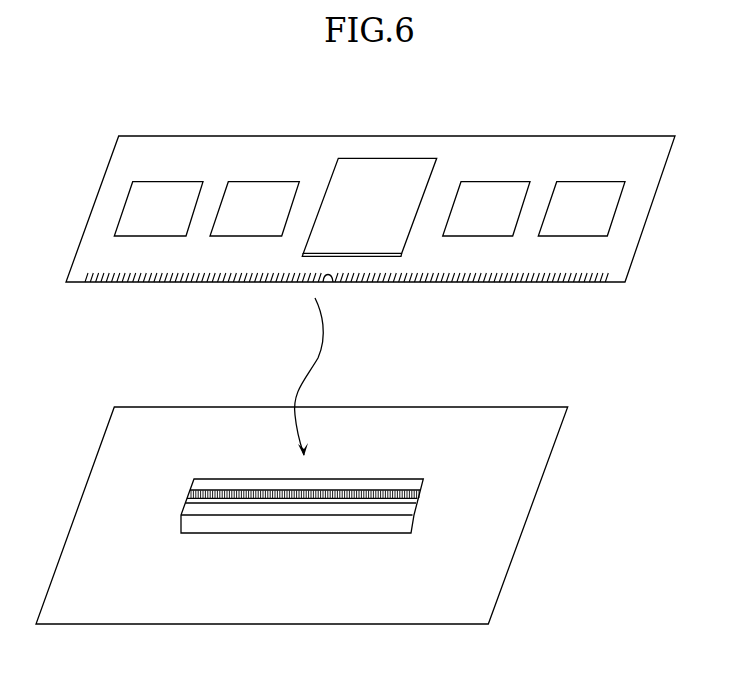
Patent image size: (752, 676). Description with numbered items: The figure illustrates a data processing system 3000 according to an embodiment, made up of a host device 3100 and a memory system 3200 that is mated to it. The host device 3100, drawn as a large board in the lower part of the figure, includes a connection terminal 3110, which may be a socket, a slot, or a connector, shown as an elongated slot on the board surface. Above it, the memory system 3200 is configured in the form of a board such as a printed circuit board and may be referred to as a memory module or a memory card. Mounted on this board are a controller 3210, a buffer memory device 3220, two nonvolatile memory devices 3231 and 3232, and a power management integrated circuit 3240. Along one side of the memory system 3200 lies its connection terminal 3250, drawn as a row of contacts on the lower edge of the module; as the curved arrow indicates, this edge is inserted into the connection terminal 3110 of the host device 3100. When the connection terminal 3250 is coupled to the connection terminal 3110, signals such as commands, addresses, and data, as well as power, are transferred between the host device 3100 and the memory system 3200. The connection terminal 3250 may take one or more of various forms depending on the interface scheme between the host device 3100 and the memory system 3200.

The data processing system 3000 is at (220, 102).
The memory system 3200 is at (370, 232).
The power management integrated circuit 3240 is at (158, 209).
The buffer memory device 3220 is at (254, 209).
The controller 3210 is at (369, 207).
The nonvolatile memory device 3231 is at (486, 209).
The nonvolatile memory device 3232 is at (581, 209).
The connection terminal 3250 is at (102, 282).
The host device 3100 is at (302, 515).
The connection terminal 3110 is at (444, 474).